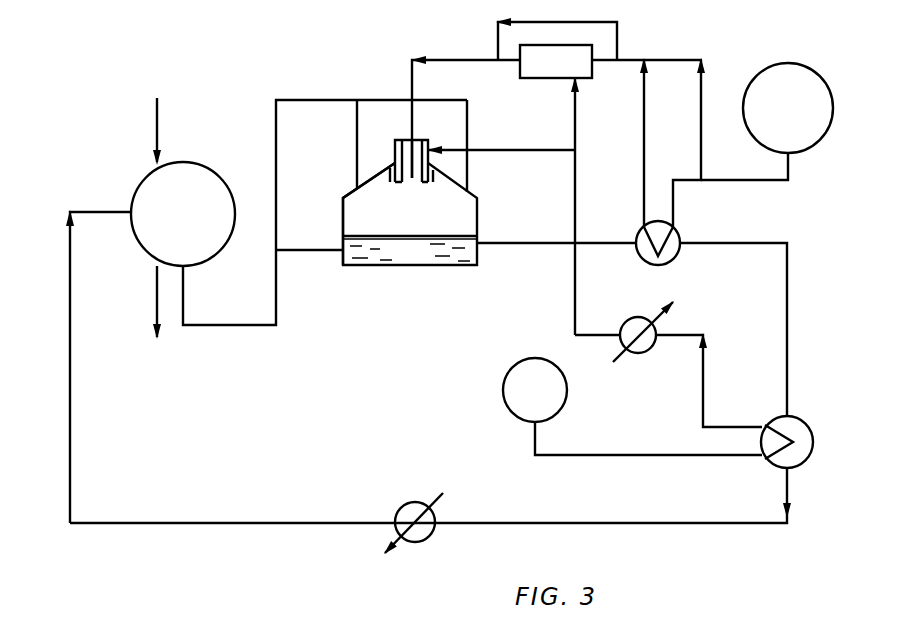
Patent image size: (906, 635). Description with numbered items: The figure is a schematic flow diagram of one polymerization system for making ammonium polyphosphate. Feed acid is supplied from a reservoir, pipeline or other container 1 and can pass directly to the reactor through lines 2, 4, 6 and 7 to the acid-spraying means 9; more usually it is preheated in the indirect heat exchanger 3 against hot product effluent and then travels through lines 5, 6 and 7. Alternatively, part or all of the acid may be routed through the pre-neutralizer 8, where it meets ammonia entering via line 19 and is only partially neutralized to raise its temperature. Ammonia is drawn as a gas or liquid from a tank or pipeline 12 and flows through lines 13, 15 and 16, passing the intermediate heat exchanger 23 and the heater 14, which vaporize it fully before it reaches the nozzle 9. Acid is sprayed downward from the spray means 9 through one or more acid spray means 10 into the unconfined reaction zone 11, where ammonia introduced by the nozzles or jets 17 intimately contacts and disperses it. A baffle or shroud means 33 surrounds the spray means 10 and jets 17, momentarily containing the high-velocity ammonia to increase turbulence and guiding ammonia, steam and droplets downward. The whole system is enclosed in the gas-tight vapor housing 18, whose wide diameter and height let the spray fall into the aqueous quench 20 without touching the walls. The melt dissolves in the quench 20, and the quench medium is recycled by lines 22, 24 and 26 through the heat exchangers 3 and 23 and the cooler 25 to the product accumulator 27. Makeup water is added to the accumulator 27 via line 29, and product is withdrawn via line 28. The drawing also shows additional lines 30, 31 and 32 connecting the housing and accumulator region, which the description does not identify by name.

The container 1 is at (833, 112).
The line 2 is at (752, 181).
The indirect heat exchanger 3 is at (658, 265).
The line 4 is at (701, 125).
The line 5 is at (644, 172).
The line 6 is at (617, 31).
The line 7 is at (412, 71).
The pre-neutralizer 8 is at (541, 79).
The acid-spraying means 9 is at (395, 146).
The acid spray means 10 is at (418, 146).
The reaction zone 11 is at (415, 219).
The tank or pipeline 12 is at (503, 398).
The line 13 is at (605, 457).
The heater 14 is at (640, 353).
The line 15 is at (575, 292).
The line 16 is at (526, 151).
The nozzles or jets 17 is at (388, 183).
The housing 18 is at (343, 218).
The line 19 is at (575, 126).
The aqueous quench 20 is at (420, 259).
The line 22 is at (787, 308).
The heat exchanger 23 is at (813, 441).
The line 24 is at (695, 525).
The cooler 25 is at (418, 542).
The line 26 is at (71, 397).
The product accumulator 27 is at (222, 173).
The line 28 is at (157, 292).
The line 29 is at (157, 128).
The line 30 is at (228, 327).
The line 31 is at (310, 252).
The line 32 is at (276, 128).
The baffle or shroud means 33 is at (437, 179).